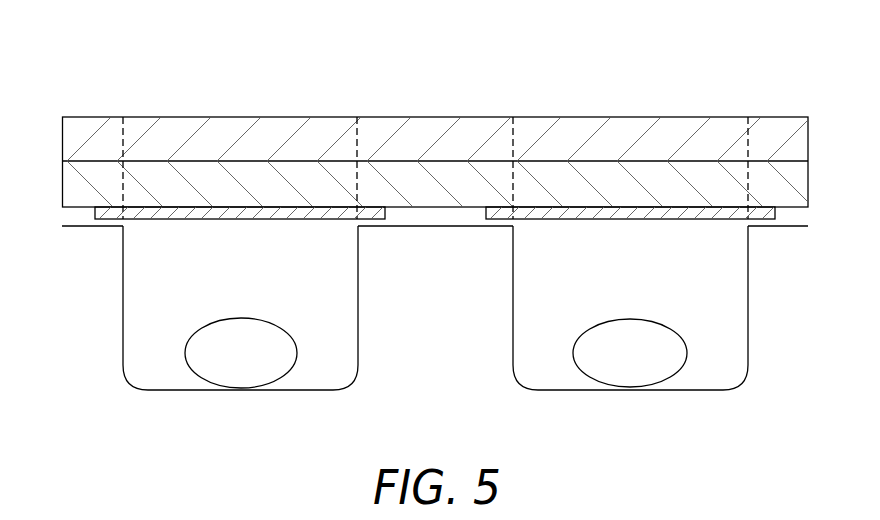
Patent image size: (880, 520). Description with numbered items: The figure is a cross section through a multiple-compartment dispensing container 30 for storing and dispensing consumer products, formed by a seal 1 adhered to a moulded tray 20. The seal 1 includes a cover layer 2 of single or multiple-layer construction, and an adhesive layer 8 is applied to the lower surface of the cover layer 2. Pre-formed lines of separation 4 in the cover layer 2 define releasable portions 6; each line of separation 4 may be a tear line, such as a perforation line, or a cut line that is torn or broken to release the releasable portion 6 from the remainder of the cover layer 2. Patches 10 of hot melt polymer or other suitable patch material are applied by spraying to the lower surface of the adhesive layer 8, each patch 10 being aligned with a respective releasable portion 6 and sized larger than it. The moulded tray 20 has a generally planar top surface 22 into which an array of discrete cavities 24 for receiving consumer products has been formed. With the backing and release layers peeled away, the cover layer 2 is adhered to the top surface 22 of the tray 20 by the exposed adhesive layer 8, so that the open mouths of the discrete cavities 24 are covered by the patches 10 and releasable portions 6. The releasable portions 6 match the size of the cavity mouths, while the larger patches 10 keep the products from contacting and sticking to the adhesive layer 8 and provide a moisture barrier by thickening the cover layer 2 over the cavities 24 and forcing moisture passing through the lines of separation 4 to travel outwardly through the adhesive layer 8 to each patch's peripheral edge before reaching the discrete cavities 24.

The seal 1 is at (146, 57).
The cover layer 2 is at (437, 122).
The lines of separation 4 is at (112, 117).
The releasable portions 6 is at (244, 118).
The adhesive layer 8 is at (806, 182).
The patches 10 is at (244, 222).
The moulded tray 20 is at (136, 428).
The top surface 22 is at (437, 228).
The discrete cavities 24 is at (319, 372).
The container 30 is at (80, 323).